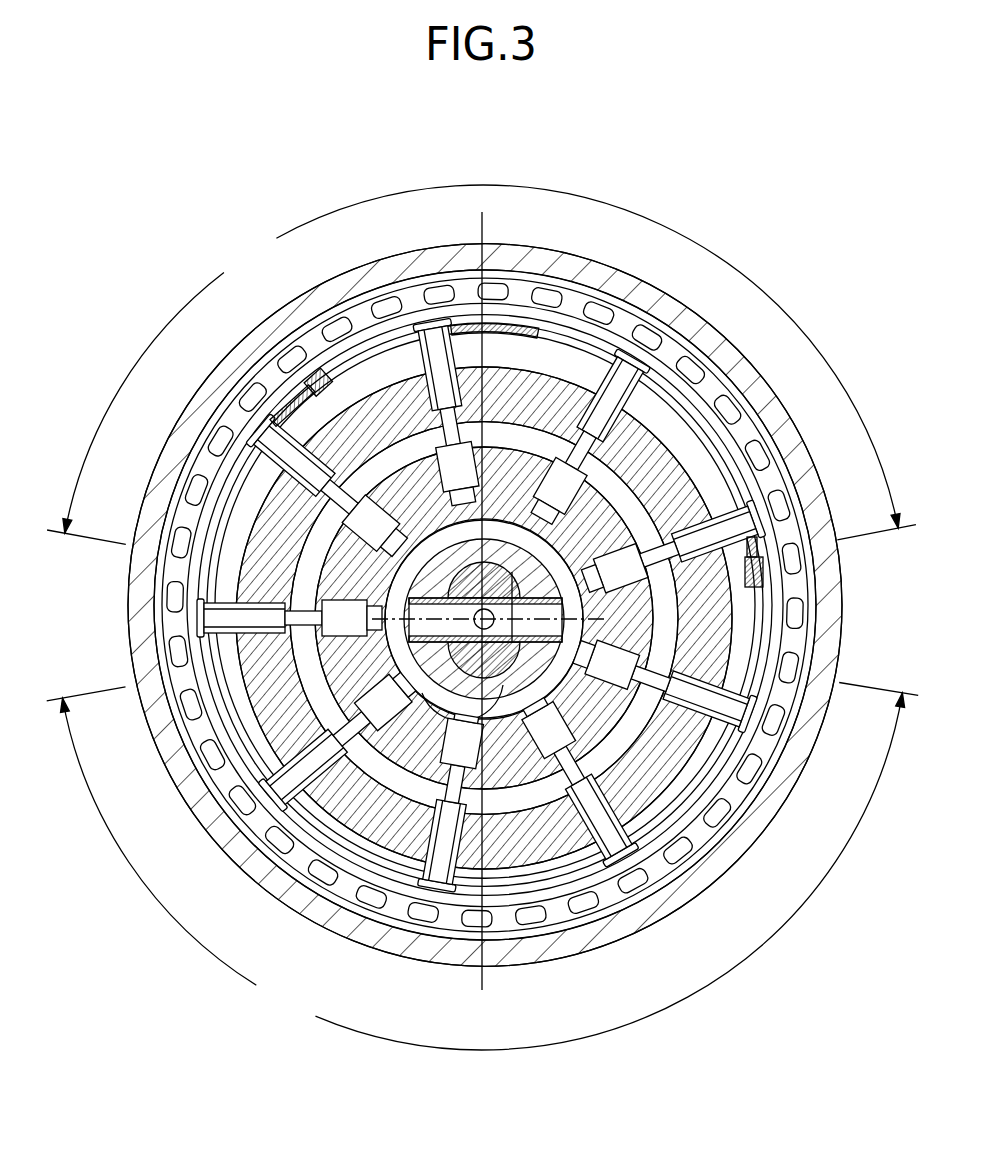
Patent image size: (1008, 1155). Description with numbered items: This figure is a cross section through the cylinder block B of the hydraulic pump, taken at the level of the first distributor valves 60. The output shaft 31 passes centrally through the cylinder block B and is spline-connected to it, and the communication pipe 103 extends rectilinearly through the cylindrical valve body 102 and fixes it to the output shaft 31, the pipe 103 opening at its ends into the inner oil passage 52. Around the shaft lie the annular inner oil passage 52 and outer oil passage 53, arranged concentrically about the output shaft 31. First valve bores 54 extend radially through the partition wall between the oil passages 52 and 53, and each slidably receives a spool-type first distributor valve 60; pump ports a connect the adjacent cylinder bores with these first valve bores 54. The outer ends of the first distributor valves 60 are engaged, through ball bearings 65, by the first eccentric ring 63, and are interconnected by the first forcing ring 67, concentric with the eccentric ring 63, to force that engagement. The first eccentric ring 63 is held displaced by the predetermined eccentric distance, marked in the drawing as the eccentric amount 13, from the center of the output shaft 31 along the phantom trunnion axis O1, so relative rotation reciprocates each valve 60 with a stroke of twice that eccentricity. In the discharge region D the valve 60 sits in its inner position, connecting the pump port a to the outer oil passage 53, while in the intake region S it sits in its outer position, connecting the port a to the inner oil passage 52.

The shaft 13 is at (490, 607).
The output shaft 31 is at (490, 725).
The inner oil passage 52 is at (560, 544).
The outer oil passage 53 is at (633, 508).
The first valve bore 54 is at (604, 472).
The first distributor valve 60 is at (762, 513).
The first eccentric ring 63 is at (655, 305).
The ball bearings 65 is at (710, 384).
The first forcing ring 67 is at (770, 495).
The cylindrical valve body 102 is at (455, 720).
The communication pipe 103 is at (396, 600).
The pump port a is at (438, 499).
The cylinder block B is at (533, 383).
The phantom trunnion axis O1 is at (485, 222).
The intake region S is at (481, 364).
The discharge region D is at (483, 866).